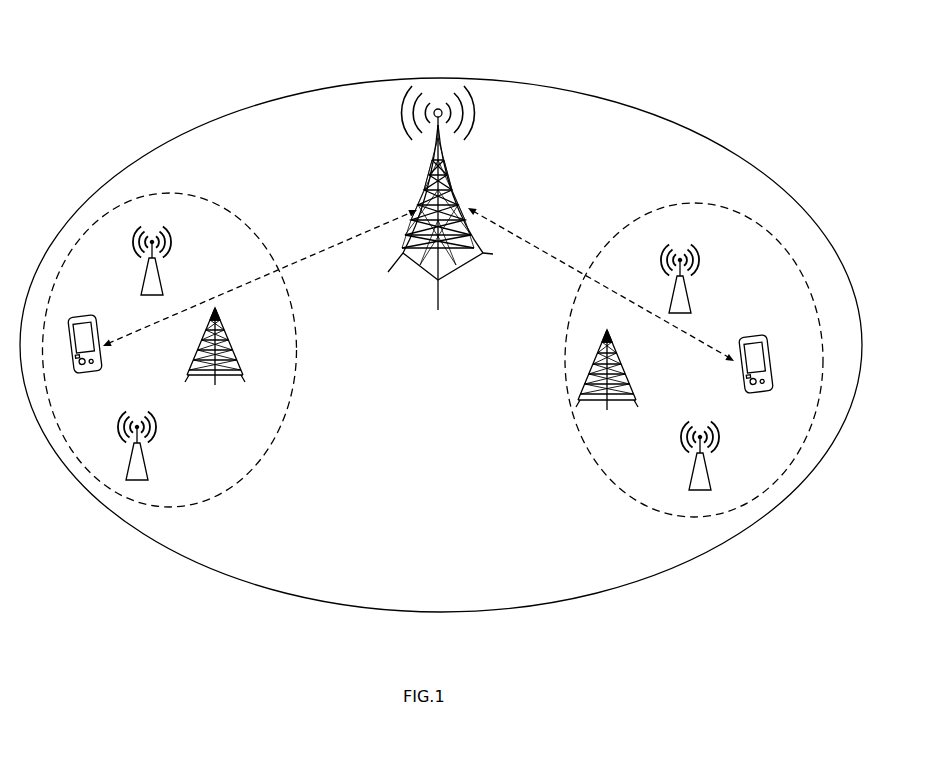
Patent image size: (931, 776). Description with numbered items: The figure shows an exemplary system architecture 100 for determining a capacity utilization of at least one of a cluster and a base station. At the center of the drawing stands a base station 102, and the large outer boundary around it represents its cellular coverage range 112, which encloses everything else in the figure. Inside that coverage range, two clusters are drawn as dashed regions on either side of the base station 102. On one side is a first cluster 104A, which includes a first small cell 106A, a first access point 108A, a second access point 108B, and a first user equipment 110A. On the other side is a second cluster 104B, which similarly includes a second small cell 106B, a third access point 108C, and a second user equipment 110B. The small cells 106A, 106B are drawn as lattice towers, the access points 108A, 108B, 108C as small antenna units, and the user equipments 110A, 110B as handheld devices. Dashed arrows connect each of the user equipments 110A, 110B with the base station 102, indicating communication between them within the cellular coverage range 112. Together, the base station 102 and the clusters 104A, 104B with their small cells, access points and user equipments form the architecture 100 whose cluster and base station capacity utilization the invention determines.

The system architecture 100 is at (495, 65).
The base station 102 is at (455, 183).
The first cluster 104A is at (688, 205).
The second cluster 104B is at (253, 230).
The first small cell 106A is at (621, 365).
The second small cell 106B is at (231, 346).
The first access point 108A is at (689, 300).
The second access point 108B is at (147, 467).
The third access point 108C is at (162, 284).
The first user equipment 110A is at (762, 341).
The second user equipment 110B is at (84, 313).
The cellular coverage range 112 is at (811, 216).